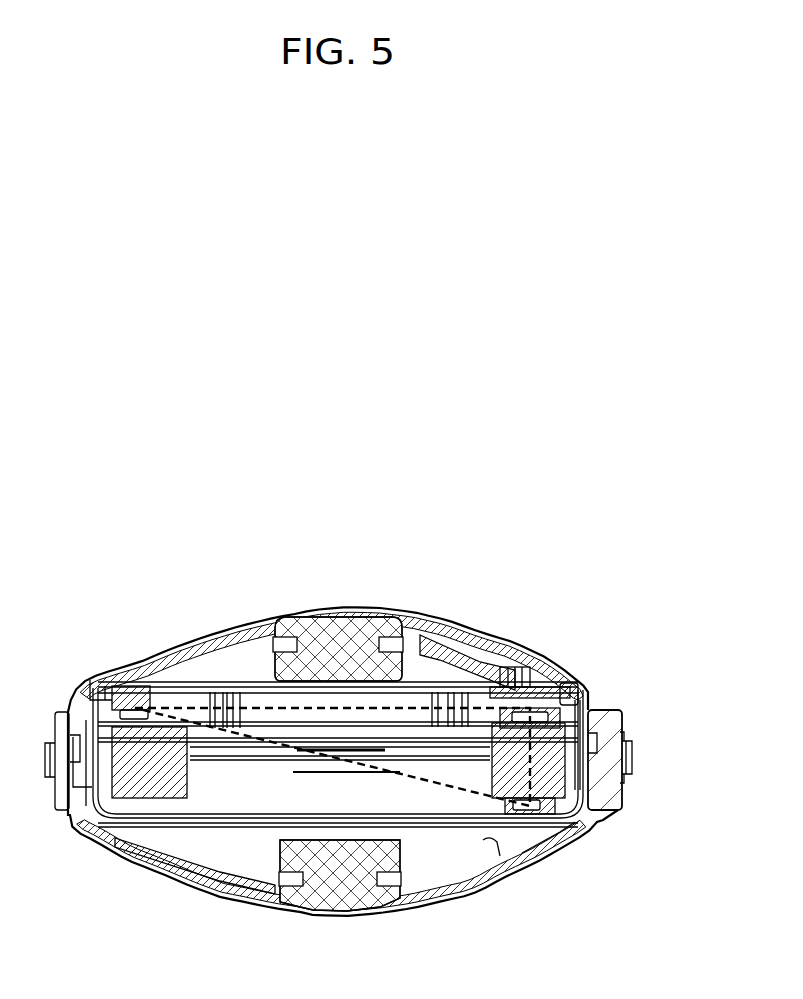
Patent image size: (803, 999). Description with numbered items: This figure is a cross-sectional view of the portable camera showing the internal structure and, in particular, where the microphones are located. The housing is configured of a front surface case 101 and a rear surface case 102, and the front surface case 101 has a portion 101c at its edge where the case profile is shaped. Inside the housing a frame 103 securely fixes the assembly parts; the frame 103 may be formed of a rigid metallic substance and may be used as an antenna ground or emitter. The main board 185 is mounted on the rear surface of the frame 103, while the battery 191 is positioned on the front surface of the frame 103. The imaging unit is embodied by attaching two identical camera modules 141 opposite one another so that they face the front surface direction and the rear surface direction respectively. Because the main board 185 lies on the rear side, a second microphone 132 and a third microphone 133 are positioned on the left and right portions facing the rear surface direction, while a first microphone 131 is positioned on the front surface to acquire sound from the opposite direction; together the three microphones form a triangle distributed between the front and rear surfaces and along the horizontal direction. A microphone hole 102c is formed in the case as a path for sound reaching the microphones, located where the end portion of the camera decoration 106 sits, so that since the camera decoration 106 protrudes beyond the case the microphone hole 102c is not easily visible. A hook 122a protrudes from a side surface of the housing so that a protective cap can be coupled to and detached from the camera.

The front surface case 101 is at (190, 857).
The inclined portion of first case 101c is at (530, 805).
The rear surface case 102 is at (428, 640).
The microphone hole 102c is at (145, 690).
The frame 103 is at (445, 752).
The camera decoration 106 is at (440, 652).
The hook 122a is at (633, 762).
The first microphone 131 is at (590, 808).
The second microphone 132 is at (125, 693).
The third microphone 133 is at (513, 690).
The camera module 141 is at (328, 650).
The main board 185 is at (565, 670).
The battery 191 is at (414, 805).